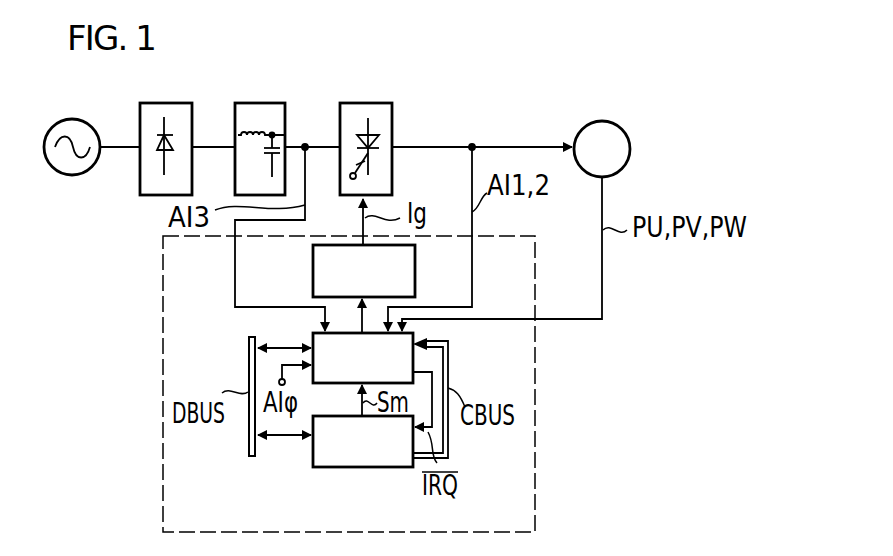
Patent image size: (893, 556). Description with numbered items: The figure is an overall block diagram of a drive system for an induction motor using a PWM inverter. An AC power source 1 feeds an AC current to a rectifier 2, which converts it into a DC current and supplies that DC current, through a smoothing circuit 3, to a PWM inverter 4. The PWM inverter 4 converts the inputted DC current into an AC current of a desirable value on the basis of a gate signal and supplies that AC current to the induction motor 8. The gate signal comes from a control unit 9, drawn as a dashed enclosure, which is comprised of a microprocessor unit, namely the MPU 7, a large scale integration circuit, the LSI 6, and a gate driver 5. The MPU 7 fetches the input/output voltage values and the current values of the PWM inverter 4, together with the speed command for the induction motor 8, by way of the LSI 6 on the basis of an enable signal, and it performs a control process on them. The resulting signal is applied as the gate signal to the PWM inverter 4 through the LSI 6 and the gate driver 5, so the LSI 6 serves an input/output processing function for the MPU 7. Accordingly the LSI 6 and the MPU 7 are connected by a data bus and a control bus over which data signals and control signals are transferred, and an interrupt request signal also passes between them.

The AC power source 1 is at (81, 121).
The rectifier 2 is at (163, 103).
The smoothing circuit 3 is at (257, 103).
The PWM inverter 4 is at (360, 103).
The gate driver 5 is at (313, 273).
The large scale integration circuit (LSI) 6 is at (313, 332).
The microprocessor unit (MPU) 7 is at (322, 467).
The induction motor 8 is at (628, 131).
The control unit 9 is at (537, 427).